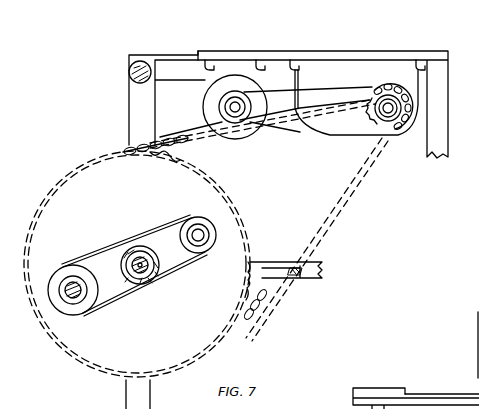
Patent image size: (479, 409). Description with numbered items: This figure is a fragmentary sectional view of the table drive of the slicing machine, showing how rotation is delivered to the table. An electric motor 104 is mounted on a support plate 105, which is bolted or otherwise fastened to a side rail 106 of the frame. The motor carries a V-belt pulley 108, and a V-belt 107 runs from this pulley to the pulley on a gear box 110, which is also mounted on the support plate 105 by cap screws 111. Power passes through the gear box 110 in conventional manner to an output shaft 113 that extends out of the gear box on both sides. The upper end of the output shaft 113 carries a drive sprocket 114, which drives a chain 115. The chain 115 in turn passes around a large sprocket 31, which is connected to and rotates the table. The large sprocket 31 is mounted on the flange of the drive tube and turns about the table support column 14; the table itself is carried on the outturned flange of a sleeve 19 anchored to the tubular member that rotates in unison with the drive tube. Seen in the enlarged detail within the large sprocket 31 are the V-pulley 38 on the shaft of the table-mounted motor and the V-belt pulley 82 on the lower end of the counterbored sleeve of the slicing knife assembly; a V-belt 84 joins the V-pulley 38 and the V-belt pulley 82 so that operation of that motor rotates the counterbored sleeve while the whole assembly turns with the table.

The table support column 14 is at (148, 275).
The sleeve 19 is at (130, 290).
The large sprocket 31 is at (78, 348).
The V-pulley 38 is at (194, 218).
The V-belt pulley 82 is at (60, 268).
The V-belt 84 is at (103, 252).
The electric motor 104 is at (203, 101).
The support plate 105 is at (306, 51).
The side rail 106 is at (178, 55).
The V-belt 107 is at (290, 128).
The V-belt pulley 108 is at (392, 383).
The gear box 110 is at (348, 72).
The cap screws 111 is at (478, 312).
The output shaft 113 is at (380, 122).
The drive sprocket 114 is at (368, 112).
The chain 115 is at (344, 210).